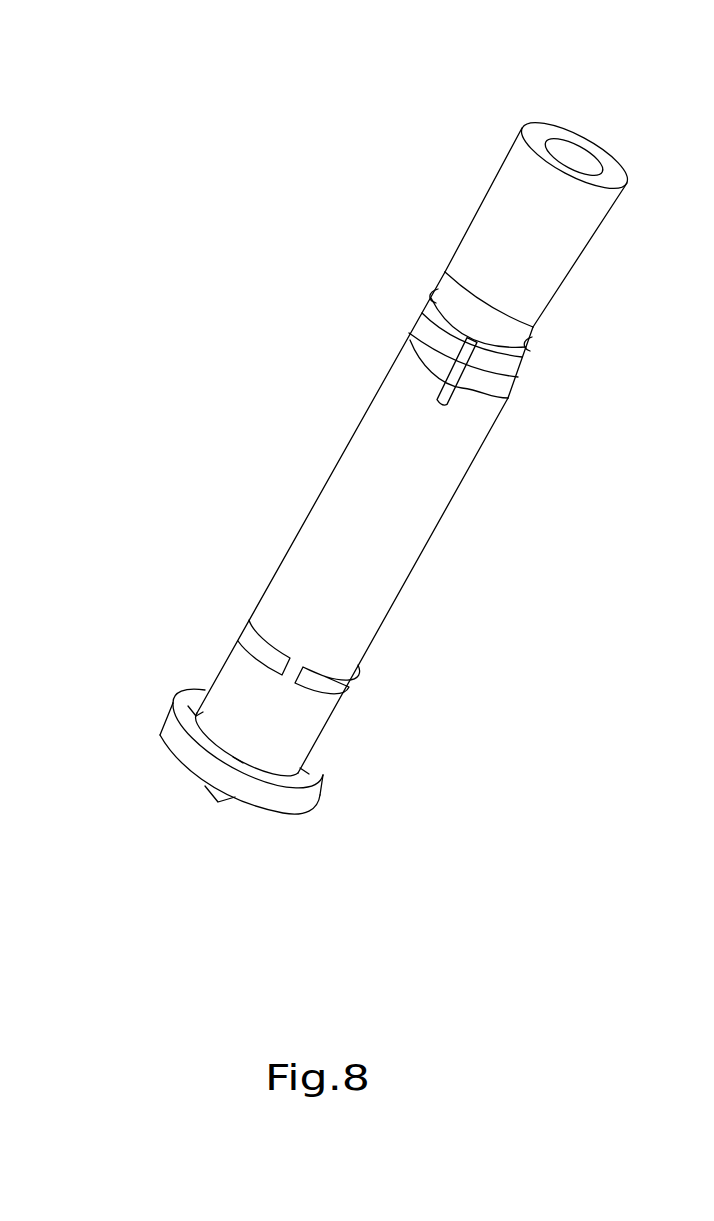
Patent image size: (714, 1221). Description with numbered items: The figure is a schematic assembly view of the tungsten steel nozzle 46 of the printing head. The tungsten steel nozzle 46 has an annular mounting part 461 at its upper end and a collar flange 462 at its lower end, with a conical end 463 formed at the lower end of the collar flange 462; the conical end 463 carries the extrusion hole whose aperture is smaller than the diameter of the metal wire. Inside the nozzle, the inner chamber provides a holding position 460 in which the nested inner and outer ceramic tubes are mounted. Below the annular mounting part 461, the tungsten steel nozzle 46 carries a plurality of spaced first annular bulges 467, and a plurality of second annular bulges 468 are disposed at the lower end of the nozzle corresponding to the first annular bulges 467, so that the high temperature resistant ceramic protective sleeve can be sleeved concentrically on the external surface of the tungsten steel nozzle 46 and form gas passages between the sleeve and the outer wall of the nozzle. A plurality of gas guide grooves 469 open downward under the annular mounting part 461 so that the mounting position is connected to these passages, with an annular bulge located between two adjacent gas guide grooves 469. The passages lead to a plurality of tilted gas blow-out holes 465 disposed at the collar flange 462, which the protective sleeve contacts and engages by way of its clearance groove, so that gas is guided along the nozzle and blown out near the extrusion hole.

The tungsten steel nozzle 46 is at (243, 446).
The holding position 460 is at (556, 150).
The annular mounting part 461 is at (453, 298).
The collar flange 462 is at (163, 722).
The conical end 463 is at (213, 798).
The gas blow-out hole 465 is at (183, 694).
The first annular bulge 467 is at (408, 341).
The second annular bulge 468 is at (346, 694).
The gas guide groove 469 is at (522, 382).